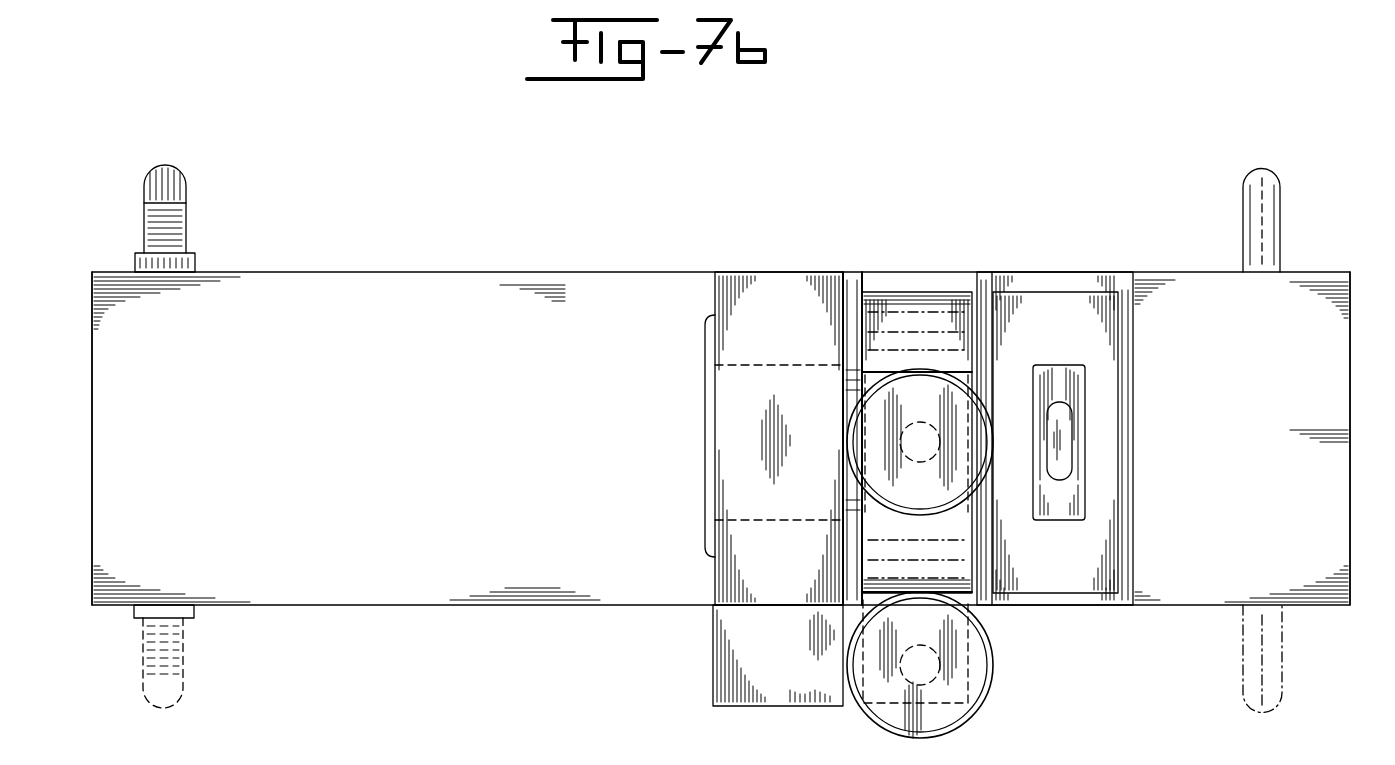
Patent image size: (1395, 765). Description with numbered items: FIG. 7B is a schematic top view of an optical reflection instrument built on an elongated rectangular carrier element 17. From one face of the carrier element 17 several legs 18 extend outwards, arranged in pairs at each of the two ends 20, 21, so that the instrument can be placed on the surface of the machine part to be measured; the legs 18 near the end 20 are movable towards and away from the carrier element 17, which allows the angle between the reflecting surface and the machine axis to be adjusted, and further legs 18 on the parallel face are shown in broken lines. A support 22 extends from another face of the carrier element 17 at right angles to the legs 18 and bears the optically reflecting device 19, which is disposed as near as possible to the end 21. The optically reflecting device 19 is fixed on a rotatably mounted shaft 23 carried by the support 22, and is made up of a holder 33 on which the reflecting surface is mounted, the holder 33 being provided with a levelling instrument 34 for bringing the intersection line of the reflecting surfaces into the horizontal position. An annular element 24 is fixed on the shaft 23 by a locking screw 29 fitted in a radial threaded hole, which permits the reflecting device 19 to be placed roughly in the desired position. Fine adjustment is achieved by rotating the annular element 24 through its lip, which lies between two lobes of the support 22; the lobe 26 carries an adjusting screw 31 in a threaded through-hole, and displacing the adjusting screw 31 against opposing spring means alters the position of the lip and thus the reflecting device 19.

The carrier element 17 is at (416, 295).
The legs 18 is at (172, 213).
The optically reflecting device 19 is at (1128, 328).
The end of the carrier element 20 is at (80, 300).
The end of the carrier element 21 is at (1364, 330).
The support 22 is at (778, 292).
The shaft 23 is at (850, 360).
The annular element 24 is at (953, 332).
The lobe 26 is at (735, 651).
The locking screw 29 is at (916, 388).
The adjusting screw 31 is at (975, 684).
The holder 33 is at (1038, 578).
The levelling instrument 34 is at (1070, 508).